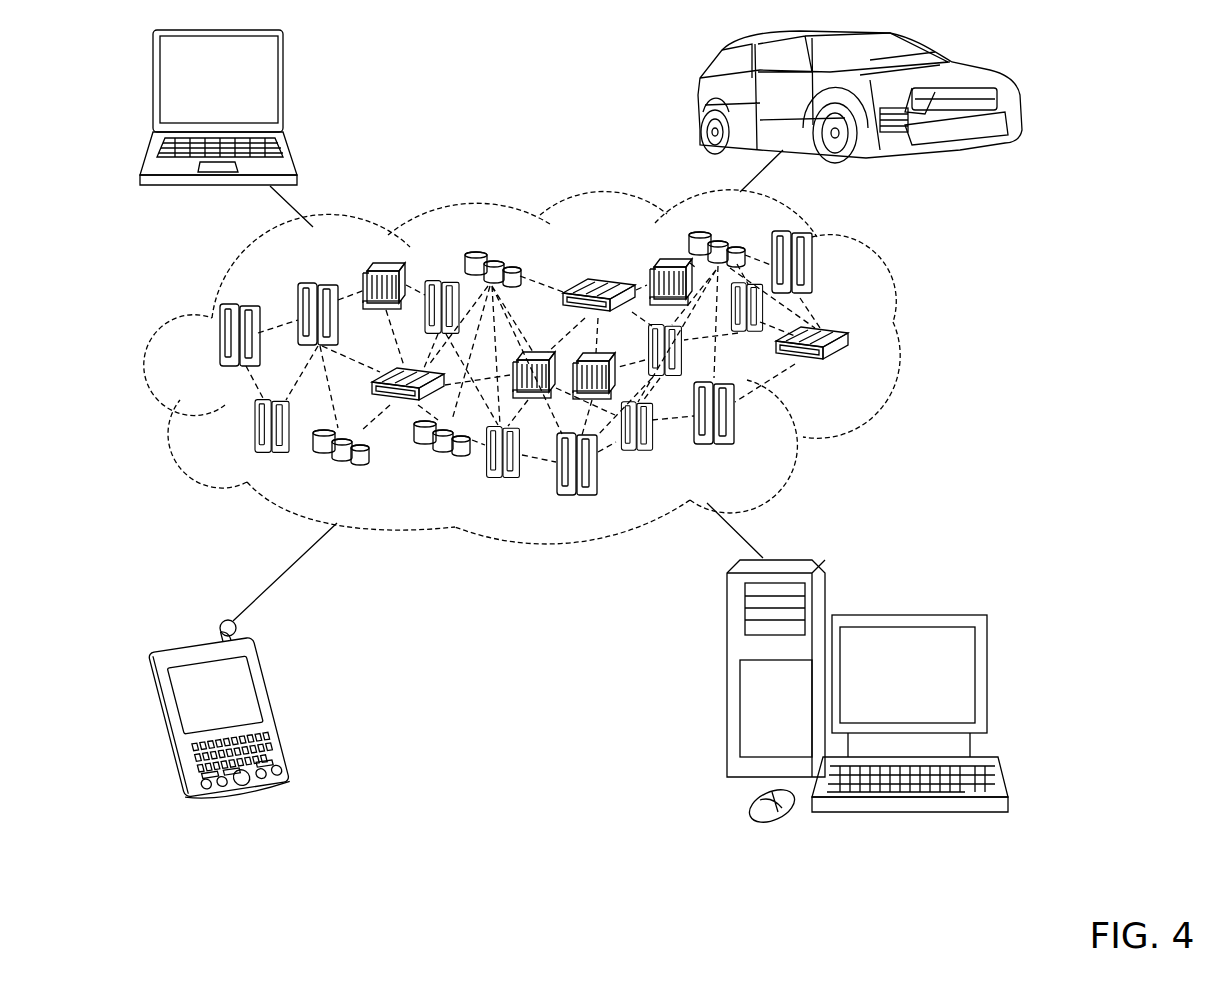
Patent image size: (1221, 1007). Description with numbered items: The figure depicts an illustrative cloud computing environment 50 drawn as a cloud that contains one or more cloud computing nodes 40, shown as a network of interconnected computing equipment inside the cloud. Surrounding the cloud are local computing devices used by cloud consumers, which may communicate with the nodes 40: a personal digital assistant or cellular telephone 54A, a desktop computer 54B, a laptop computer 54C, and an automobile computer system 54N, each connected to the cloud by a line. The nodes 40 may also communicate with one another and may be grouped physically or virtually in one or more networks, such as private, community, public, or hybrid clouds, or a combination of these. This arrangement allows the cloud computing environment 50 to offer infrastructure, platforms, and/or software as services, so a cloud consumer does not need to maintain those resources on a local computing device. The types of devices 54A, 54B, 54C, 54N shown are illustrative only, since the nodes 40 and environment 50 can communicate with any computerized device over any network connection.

The cloud computing environment 50 is at (905, 343).
The cloud computing nodes 40 is at (863, 374).
The personal digital assistant or cellular telephone 54A is at (278, 705).
The desktop computer 54B is at (907, 615).
The laptop computer 54C is at (284, 82).
The automobile computer system 54N is at (700, 100).